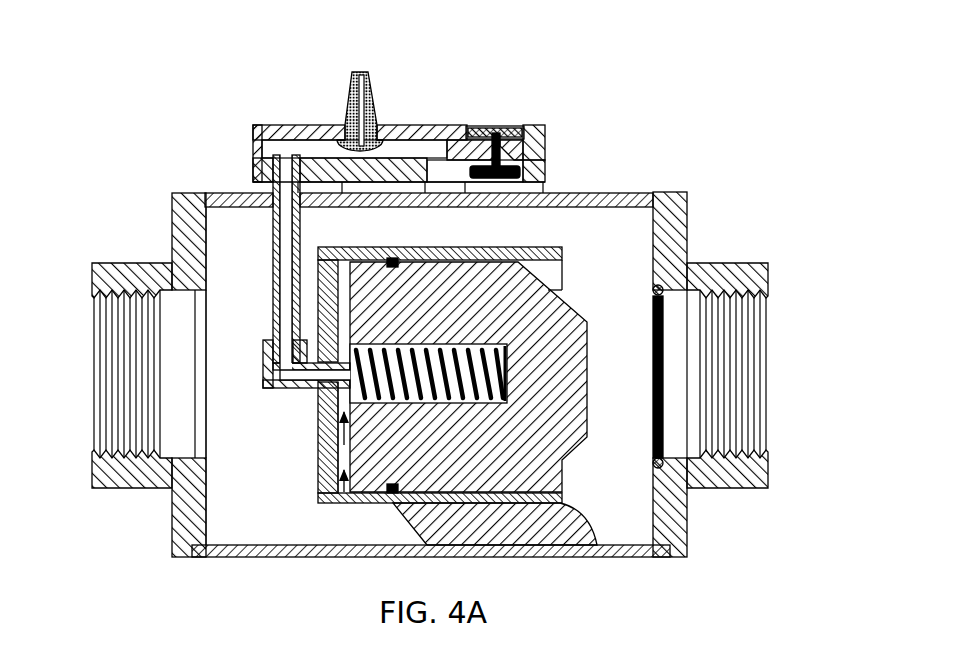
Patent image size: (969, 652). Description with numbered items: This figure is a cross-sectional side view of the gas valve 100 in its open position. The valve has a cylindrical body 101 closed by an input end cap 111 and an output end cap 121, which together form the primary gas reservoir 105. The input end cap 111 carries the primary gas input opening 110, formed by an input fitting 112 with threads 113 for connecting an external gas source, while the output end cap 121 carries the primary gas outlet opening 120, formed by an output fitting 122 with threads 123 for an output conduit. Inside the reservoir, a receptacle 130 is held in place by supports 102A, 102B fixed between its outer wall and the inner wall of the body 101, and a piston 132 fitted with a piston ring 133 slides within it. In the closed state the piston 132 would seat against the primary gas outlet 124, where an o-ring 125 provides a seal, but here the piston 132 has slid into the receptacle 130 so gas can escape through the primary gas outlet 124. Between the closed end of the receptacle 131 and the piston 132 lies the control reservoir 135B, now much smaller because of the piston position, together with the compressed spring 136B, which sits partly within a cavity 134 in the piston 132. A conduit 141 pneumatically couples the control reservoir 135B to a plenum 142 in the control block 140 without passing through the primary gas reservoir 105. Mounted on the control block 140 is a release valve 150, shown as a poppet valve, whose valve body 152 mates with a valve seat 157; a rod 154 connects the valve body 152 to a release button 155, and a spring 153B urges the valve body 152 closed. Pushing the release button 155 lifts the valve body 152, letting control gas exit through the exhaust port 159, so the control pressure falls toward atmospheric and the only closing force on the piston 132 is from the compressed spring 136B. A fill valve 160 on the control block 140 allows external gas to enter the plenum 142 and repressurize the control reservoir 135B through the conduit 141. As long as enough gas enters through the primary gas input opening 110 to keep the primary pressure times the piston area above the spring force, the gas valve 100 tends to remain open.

The gas valve 100 is at (445, 327).
The body 101 is at (215, 193).
The support 102A is at (598, 532).
The support 102B is at (565, 288).
The primary gas reservoir 105 is at (263, 457).
The primary gas input opening 110 is at (117, 406).
The input end cap 111 is at (174, 195).
The input fitting 112 is at (133, 497).
The threads 113 is at (100, 343).
The primary gas outlet opening 120 is at (769, 349).
The output end cap 121 is at (682, 192).
The output fitting 122 is at (737, 263).
The threads 123 is at (760, 338).
The primary gas outlet 124 is at (677, 375).
The o-ring 125 is at (687, 263).
The receptacle 130 is at (505, 249).
The closed end of the receptacle 131 is at (338, 414).
The piston 132 is at (590, 352).
The piston ring 133 is at (392, 258).
The cavity 134 is at (670, 520).
The control reservoir 135B is at (344, 497).
The compressed spring 136B is at (343, 418).
The control block 140 is at (302, 125).
The conduit 141 is at (280, 244).
The plenum 142 is at (286, 147).
The release valve 150 is at (537, 111).
The valve body 152 is at (545, 166).
The spring 153B is at (545, 174).
The rod 154 is at (495, 127).
The release button 155 is at (517, 127).
The valve seat 157 is at (470, 152).
The exhaust port 159 is at (550, 148).
The fill valve 160 is at (372, 105).